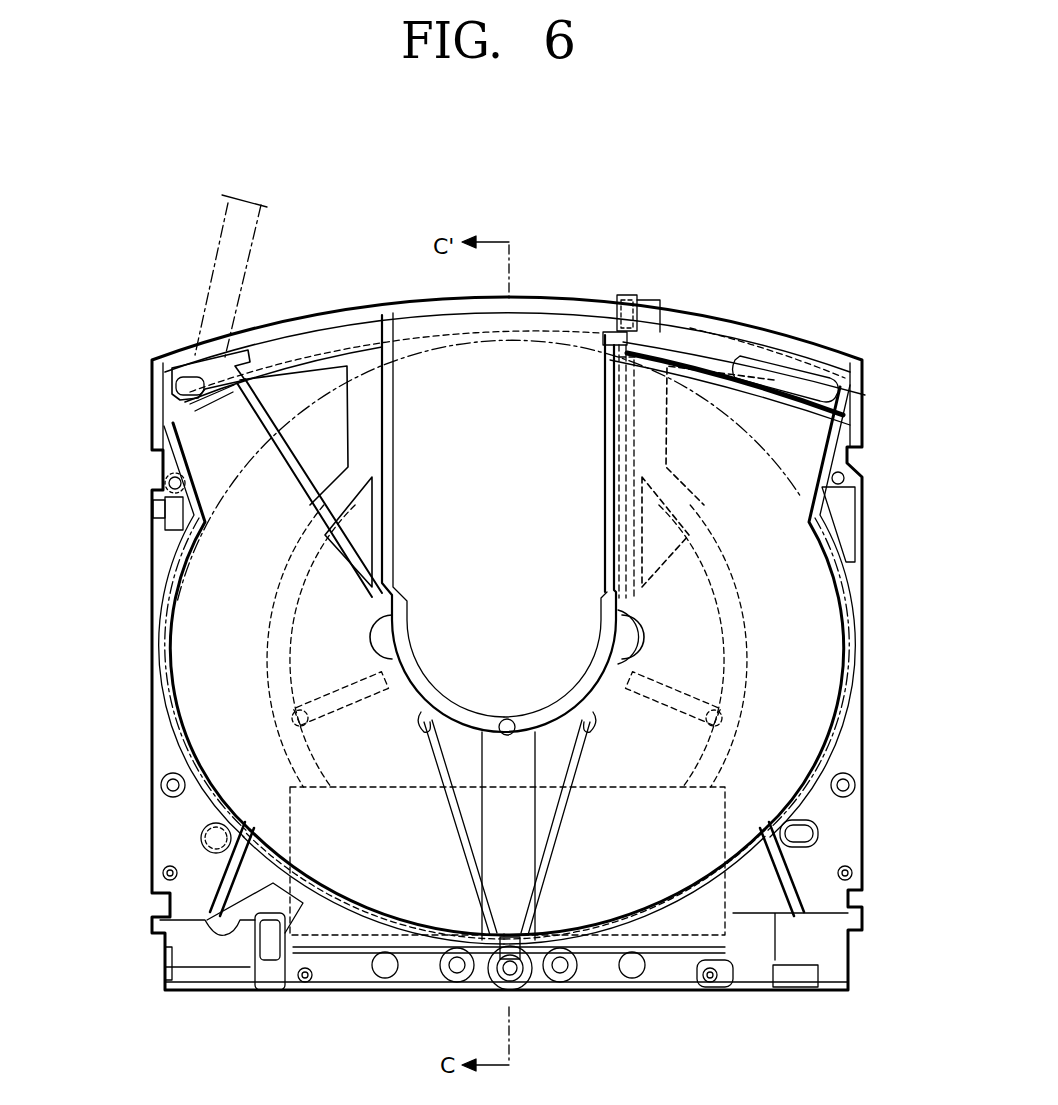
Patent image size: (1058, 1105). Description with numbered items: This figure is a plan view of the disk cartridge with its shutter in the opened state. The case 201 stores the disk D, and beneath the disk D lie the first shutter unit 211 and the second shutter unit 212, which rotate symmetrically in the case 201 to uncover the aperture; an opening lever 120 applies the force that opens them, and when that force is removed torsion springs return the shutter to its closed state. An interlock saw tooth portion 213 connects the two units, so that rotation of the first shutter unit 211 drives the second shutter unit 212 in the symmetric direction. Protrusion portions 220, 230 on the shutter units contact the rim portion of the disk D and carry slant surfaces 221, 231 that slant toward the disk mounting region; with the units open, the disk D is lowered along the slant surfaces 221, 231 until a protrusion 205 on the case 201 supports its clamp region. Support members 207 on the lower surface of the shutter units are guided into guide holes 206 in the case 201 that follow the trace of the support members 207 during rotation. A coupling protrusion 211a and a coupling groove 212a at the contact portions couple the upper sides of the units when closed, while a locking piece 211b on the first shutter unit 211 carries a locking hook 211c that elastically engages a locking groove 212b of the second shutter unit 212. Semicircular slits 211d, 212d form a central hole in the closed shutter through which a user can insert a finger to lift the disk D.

The opening lever 120 is at (225, 237).
The case 201 is at (876, 328).
The protrusion 205 is at (507, 719).
The guide holes 206 is at (350, 697).
The support members 207 is at (308, 730).
The first shutter unit 211 is at (205, 628).
The coupling protrusion 211a is at (297, 470).
The locking piece 211b is at (190, 377).
The locking hook 211c is at (245, 350).
The semicircular slit 211d is at (372, 628).
The second shutter unit 212 is at (800, 623).
The coupling groove 212a is at (608, 437).
The locking groove 212b is at (633, 313).
The semicircular slit 212d is at (633, 627).
The interlock saw tooth portion 213 is at (520, 993).
The protrusion portion 220 is at (773, 370).
The slant surface 221 is at (733, 360).
The protrusion portion 230 is at (328, 958).
The slant surface 231 is at (340, 915).
The disk D is at (707, 393).